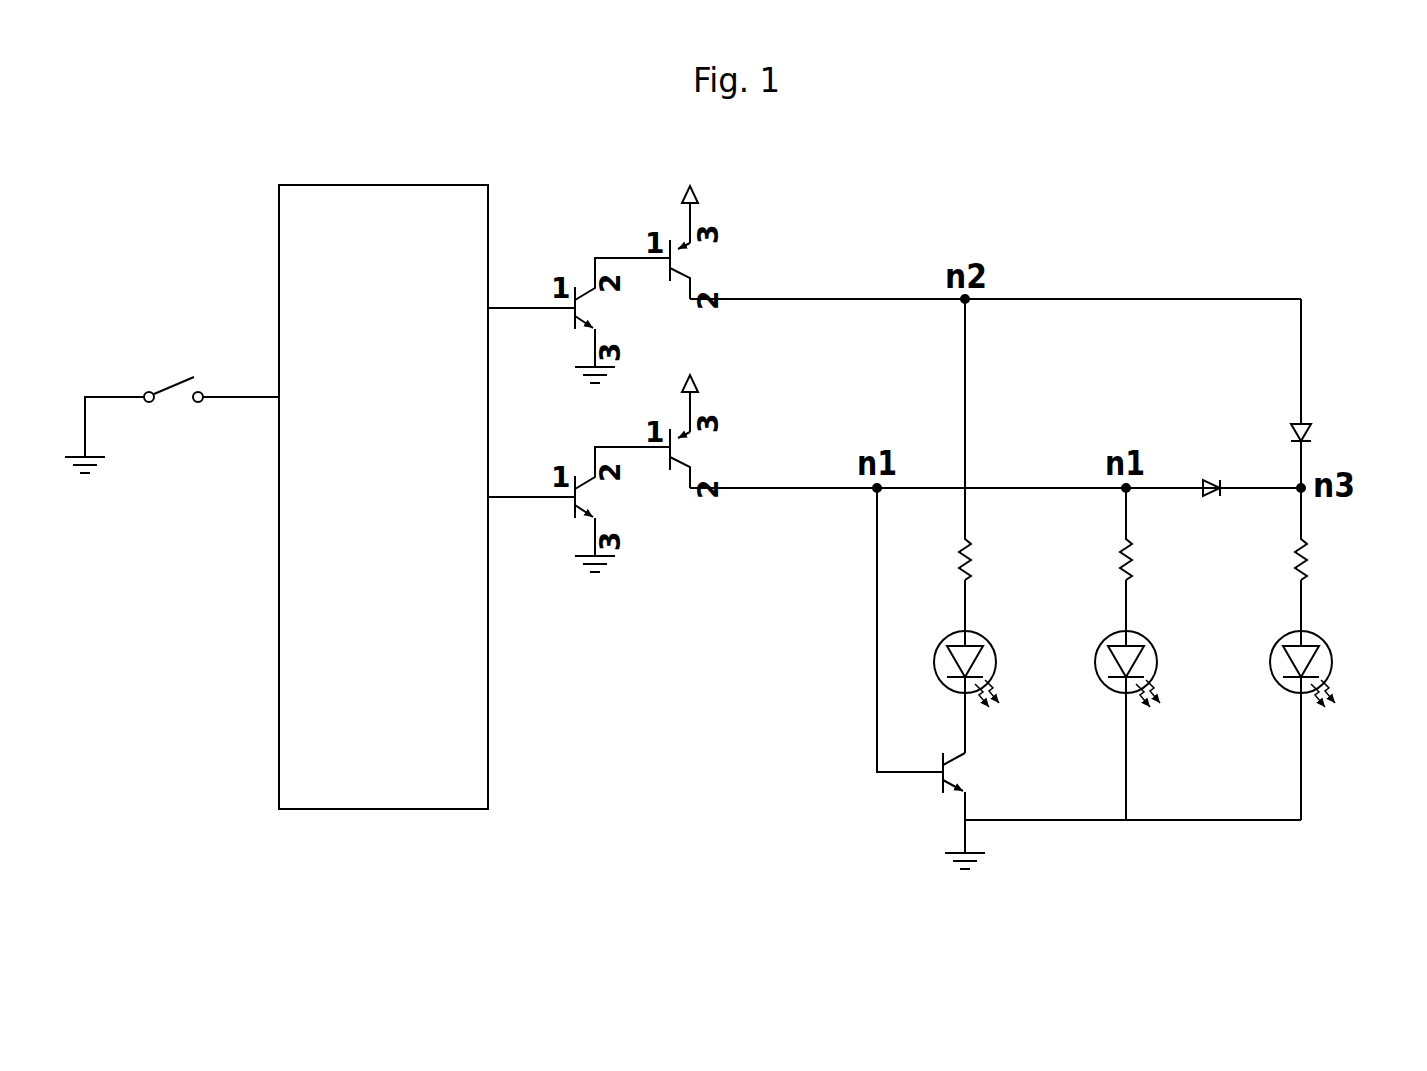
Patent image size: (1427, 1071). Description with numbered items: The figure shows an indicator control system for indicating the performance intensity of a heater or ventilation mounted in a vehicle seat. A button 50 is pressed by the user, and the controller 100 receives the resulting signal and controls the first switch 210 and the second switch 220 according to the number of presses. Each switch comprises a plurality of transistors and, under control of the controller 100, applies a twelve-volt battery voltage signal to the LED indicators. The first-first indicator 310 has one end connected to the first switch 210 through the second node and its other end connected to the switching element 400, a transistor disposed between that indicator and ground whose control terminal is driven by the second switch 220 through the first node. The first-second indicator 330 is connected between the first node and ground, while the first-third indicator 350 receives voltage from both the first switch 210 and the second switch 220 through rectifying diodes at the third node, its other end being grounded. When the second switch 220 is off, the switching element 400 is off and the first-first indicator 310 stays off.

The button 50 is at (166, 352).
The controller 100 is at (488, 692).
The first switch 210 is at (573, 258).
The second switch 220 is at (573, 446).
The (1-1)-th indicator 310 is at (988, 626).
The (1-2)-th indicator 330 is at (1149, 626).
The (1-3)-th indicator 350 is at (1324, 626).
The switching element 400 is at (903, 806).